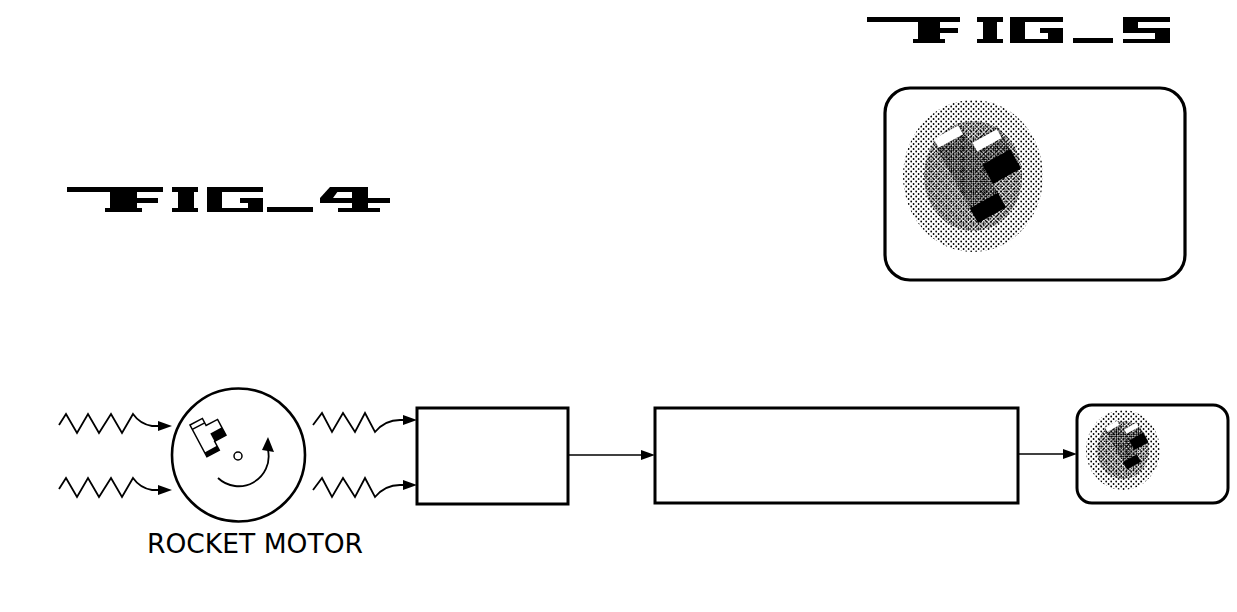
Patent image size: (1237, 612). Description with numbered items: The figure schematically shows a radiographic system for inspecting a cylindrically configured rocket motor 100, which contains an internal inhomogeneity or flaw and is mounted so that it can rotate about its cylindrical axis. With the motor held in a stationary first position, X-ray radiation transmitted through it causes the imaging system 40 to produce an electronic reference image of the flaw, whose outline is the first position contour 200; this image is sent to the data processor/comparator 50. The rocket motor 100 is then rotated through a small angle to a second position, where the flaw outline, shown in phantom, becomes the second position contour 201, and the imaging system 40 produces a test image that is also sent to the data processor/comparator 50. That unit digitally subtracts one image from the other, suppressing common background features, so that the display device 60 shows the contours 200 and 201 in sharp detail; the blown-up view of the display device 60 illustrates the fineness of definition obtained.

In FIG. 4, the rocket motor 100 is at (268, 391).
In FIG. 4, the first position contour 200 is at (220, 456).
In FIG. 5, the first position contour 200 is at (1010, 203).
In FIG. 4, the second position contour 201 is at (203, 422).
In FIG. 5, the second position contour 201 is at (978, 121).
In FIG. 4, the imaging system 40 is at (509, 407).
In FIG. 4, the data processor/comparator 50 is at (785, 407).
In FIG. 4, the display device 60 is at (1143, 405).
In FIG. 5, the display device 60 is at (884, 247).